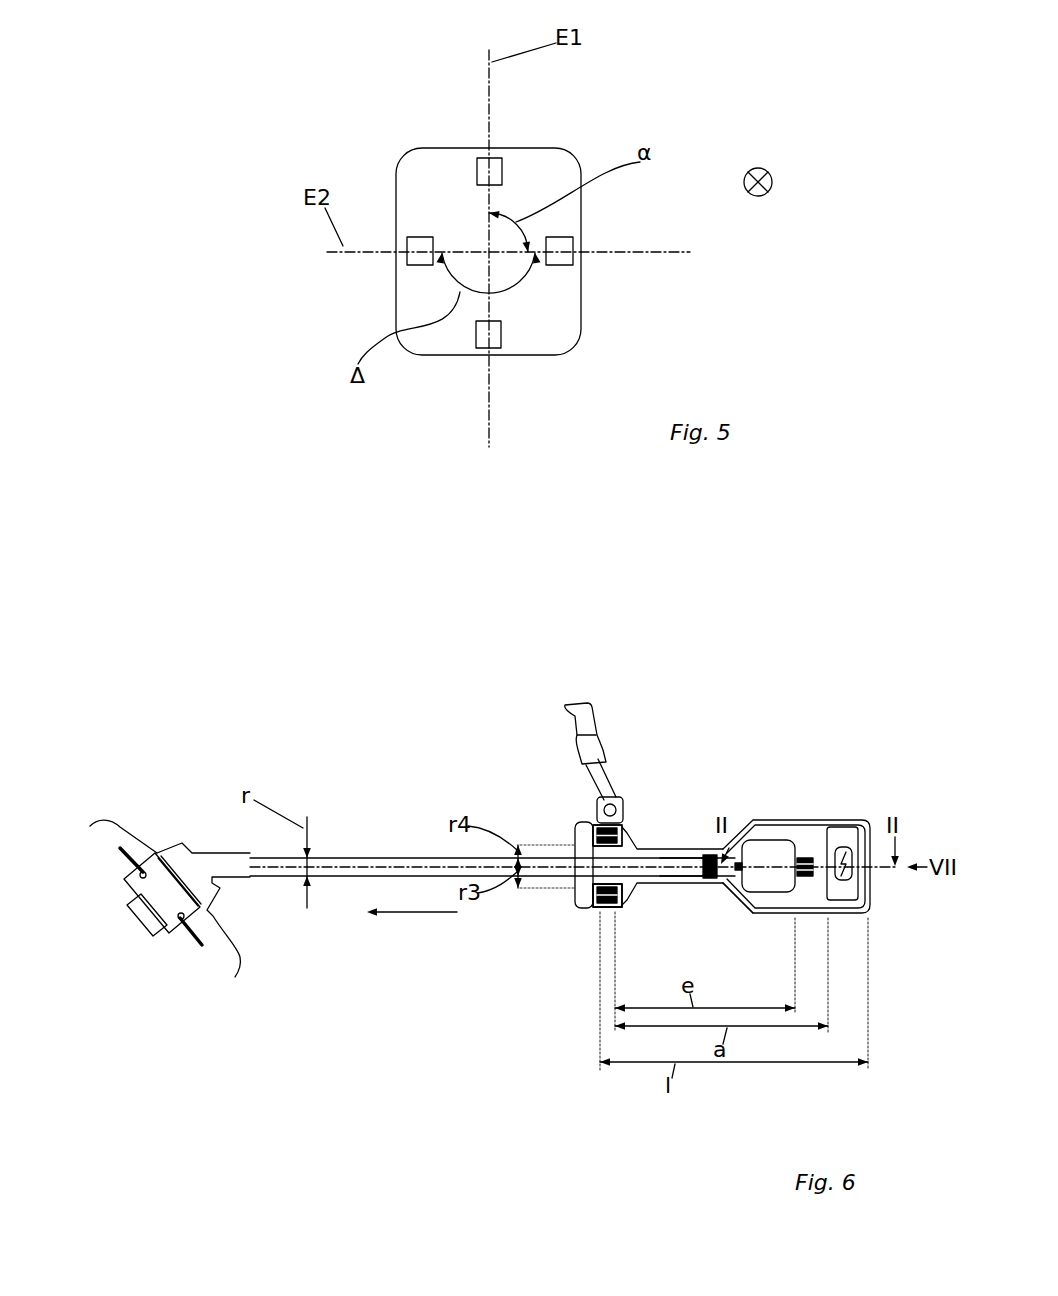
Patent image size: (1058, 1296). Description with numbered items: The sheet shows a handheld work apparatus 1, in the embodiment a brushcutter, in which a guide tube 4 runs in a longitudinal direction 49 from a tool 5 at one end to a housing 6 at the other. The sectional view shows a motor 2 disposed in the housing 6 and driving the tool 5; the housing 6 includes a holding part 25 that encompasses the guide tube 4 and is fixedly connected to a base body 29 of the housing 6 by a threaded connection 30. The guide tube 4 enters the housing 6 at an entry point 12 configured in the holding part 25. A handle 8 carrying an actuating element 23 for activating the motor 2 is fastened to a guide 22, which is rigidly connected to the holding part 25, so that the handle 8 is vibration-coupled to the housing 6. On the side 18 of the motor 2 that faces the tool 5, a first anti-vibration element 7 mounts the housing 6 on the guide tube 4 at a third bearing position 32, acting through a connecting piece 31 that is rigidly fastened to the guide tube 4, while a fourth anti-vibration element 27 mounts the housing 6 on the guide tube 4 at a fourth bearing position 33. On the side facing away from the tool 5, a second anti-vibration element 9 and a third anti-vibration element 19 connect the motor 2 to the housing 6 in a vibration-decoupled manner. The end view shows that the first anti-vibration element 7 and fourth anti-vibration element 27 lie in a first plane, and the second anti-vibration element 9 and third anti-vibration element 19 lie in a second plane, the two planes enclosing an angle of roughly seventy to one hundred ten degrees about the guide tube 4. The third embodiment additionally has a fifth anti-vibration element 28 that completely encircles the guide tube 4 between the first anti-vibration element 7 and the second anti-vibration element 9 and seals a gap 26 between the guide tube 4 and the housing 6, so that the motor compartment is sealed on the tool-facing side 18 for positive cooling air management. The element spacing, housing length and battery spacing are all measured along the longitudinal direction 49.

In FIG. 6, the handheld work apparatus 1 is at (232, 663).
In FIG. 6, the motor 2 is at (781, 846).
In FIG. 6, the guide tube 4 is at (430, 857).
In FIG. 6, the tool 5 is at (193, 945).
In FIG. 6, the housing 6 is at (796, 787).
In FIG. 5, the first anti-vibration element 7 is at (492, 347).
In FIG. 6, the first anti-vibration element 7 is at (599, 909).
In FIG. 6, the handle 8 is at (588, 733).
In FIG. 5, the second anti-vibration element 9 is at (422, 257).
In FIG. 6, the second anti-vibration element 9 is at (805, 879).
In FIG. 6, the entry point 12 is at (585, 884).
In FIG. 6, the side of the motor that faces the tool 18 is at (730, 880).
In FIG. 5, the third anti-vibration element 19 is at (561, 253).
In FIG. 6, the guide 22 is at (606, 778).
In FIG. 6, the actuating element 23 is at (578, 742).
In FIG. 6, the holding part 25 is at (728, 843).
In FIG. 6, the gap 26 is at (695, 878).
In FIG. 5, the fourth anti-vibration element 27 is at (487, 168).
In FIG. 6, the fourth anti-vibration element 27 is at (597, 827).
In FIG. 6, the fifth anti-vibration element 28 is at (711, 853).
In FIG. 6, the base body 29 is at (770, 820).
In FIG. 6, the threaded connection 30 is at (750, 906).
In FIG. 6, the connecting piece 31 is at (575, 903).
In FIG. 6, the third bearing position 32 is at (626, 896).
In FIG. 6, the fourth bearing position 33 is at (585, 830).
In FIG. 5, the longitudinal direction 49 is at (767, 194).
In FIG. 6, the longitudinal direction 49 is at (428, 914).